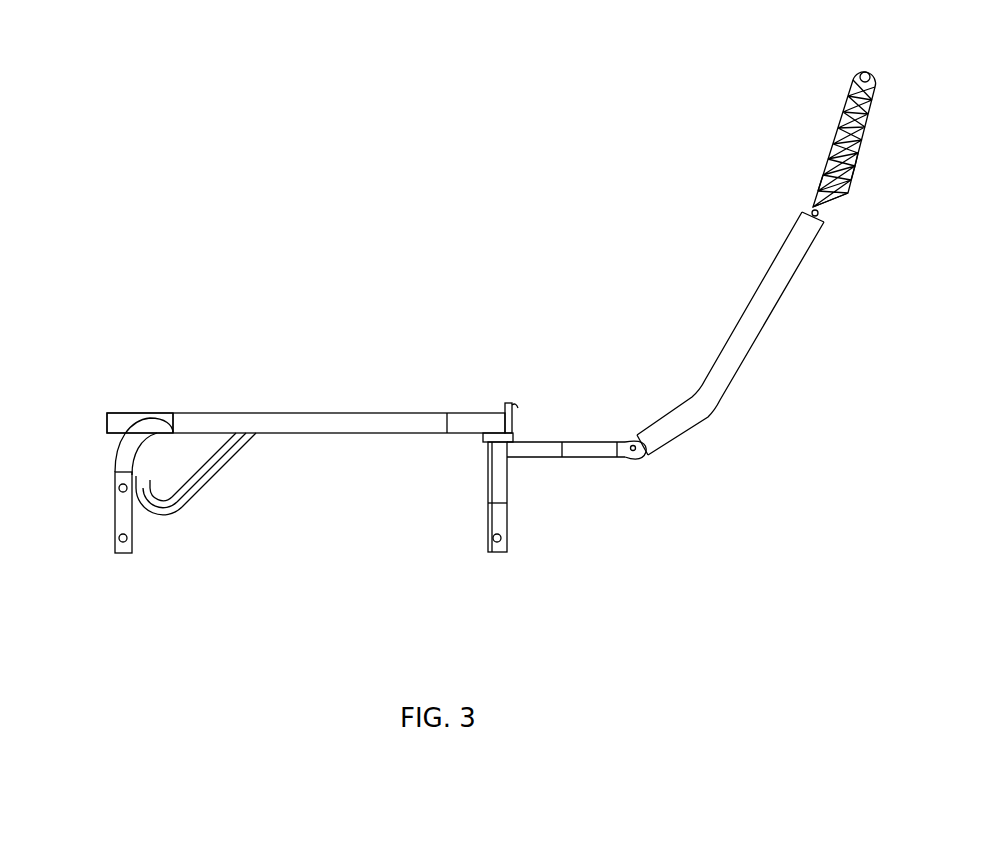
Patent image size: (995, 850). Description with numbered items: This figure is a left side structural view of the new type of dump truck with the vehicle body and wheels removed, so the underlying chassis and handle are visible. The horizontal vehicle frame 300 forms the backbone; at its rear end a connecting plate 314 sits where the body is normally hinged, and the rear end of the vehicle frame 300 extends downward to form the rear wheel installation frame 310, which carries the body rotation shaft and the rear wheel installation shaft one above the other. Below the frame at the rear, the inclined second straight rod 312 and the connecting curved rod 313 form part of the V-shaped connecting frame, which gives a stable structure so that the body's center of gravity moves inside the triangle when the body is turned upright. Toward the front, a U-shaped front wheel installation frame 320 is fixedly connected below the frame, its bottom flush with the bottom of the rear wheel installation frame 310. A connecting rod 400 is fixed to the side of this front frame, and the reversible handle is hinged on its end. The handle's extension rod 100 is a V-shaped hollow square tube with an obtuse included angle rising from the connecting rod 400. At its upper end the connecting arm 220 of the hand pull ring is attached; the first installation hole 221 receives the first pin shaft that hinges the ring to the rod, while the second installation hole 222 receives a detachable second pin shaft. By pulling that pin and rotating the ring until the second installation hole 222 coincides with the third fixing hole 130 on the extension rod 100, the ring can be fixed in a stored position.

The extension rod 100 is at (730, 338).
The third fixing hole 130 is at (806, 217).
The connecting arm 220 is at (851, 101).
The first installation hole 221 is at (814, 193).
The second installation hole 222 is at (826, 176).
The vehicle frame 300 is at (343, 417).
The rear wheel installation frame 310 is at (118, 524).
The second straight rod 312 is at (224, 468).
The connecting curved rod 313 is at (167, 514).
The connecting plate 314 is at (118, 416).
The front wheel installation frame 320 is at (499, 519).
The connecting rod 400 is at (604, 451).